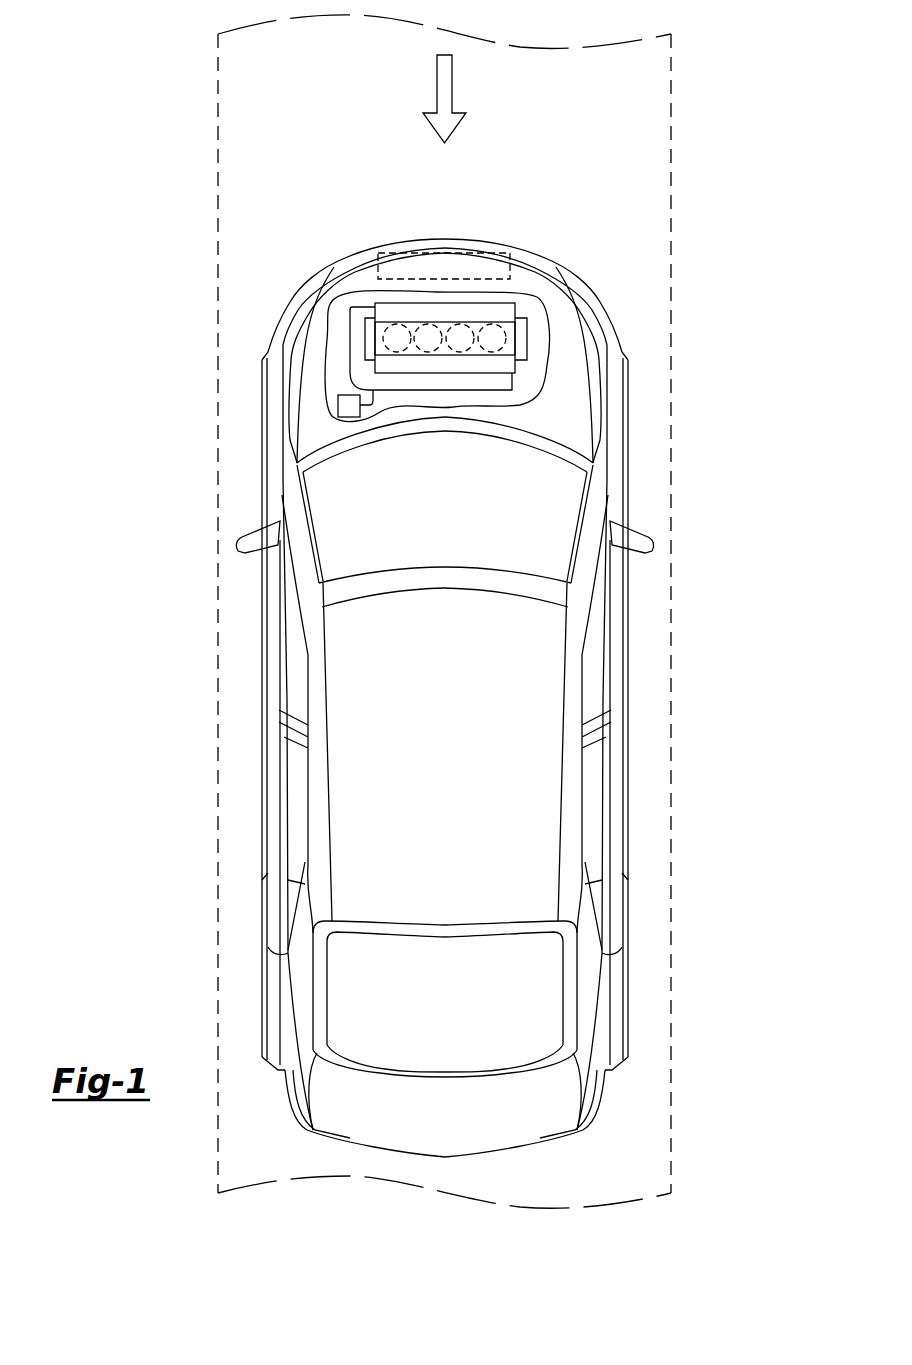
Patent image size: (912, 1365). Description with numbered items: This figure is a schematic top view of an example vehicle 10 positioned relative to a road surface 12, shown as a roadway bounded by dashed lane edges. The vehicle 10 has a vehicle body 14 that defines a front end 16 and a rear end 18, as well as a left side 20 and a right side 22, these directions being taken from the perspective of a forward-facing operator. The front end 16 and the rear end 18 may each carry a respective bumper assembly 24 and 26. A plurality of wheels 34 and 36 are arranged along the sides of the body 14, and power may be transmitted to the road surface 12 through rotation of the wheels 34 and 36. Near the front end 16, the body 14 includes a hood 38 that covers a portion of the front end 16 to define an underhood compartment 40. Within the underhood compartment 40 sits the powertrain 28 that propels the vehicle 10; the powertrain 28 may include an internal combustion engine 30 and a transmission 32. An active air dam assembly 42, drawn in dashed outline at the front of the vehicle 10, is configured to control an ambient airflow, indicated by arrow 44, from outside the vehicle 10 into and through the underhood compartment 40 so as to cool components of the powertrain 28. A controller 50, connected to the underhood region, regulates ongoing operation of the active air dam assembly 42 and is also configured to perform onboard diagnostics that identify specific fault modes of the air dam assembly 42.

The vehicle 10 is at (722, 50).
The road surface 12 is at (216, 53).
The vehicle body 14 is at (352, 782).
The front end 16 is at (362, 256).
The rear end 18 is at (369, 1150).
The left side 20 is at (262, 612).
The right side 22 is at (628, 612).
The bumper assembly 24 is at (305, 280).
The bumper assembly 26 is at (562, 1140).
The powertrain 28 is at (440, 305).
The internal combustion engine 30 is at (521, 322).
The transmission 32 is at (500, 382).
The wheels 34 is at (260, 503).
The wheels 36 is at (262, 985).
The hood 38 is at (517, 268).
The underhood compartment 40 is at (362, 300).
The active air dam assembly 42 is at (512, 268).
The ambient airflow 44 is at (436, 86).
The controller 50 is at (338, 403).